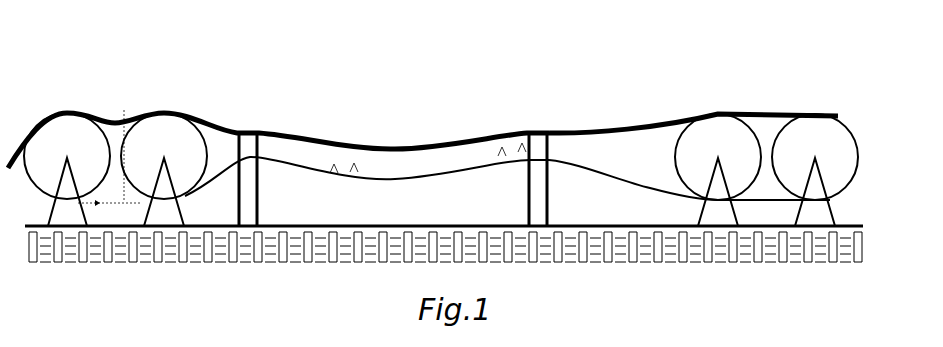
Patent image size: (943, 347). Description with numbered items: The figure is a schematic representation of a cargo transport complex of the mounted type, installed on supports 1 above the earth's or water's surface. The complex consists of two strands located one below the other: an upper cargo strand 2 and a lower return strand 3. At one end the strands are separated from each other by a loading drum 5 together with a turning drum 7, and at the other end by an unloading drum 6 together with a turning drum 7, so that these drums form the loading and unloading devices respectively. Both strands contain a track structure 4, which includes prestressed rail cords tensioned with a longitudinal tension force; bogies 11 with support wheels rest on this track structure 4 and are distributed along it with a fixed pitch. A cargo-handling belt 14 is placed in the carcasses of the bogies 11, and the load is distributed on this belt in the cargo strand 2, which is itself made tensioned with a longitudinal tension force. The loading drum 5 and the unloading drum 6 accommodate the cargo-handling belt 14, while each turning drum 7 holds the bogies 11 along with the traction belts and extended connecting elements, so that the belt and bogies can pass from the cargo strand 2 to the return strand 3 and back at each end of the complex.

The support 1 is at (252, 132).
The cargo strand 2 is at (293, 133).
The return strand 3 is at (427, 175).
The track structure 4 is at (630, 135).
The loading drum 5 is at (773, 113).
The unloading drum 6 is at (44, 111).
The turning drum 7 is at (147, 112).
The bogie 11 is at (652, 187).
The cargo-handling belt 14 is at (122, 110).